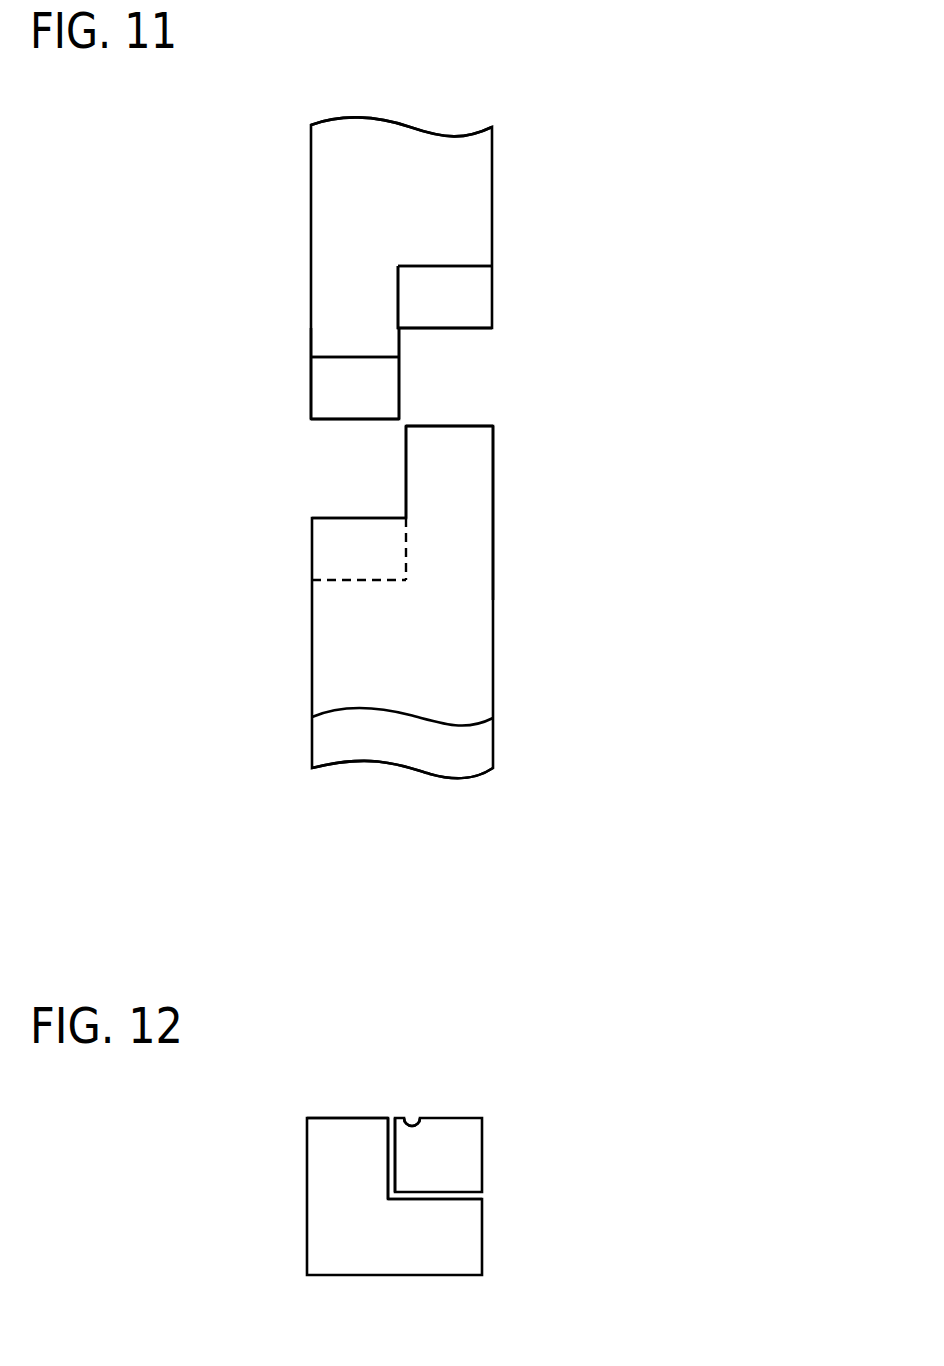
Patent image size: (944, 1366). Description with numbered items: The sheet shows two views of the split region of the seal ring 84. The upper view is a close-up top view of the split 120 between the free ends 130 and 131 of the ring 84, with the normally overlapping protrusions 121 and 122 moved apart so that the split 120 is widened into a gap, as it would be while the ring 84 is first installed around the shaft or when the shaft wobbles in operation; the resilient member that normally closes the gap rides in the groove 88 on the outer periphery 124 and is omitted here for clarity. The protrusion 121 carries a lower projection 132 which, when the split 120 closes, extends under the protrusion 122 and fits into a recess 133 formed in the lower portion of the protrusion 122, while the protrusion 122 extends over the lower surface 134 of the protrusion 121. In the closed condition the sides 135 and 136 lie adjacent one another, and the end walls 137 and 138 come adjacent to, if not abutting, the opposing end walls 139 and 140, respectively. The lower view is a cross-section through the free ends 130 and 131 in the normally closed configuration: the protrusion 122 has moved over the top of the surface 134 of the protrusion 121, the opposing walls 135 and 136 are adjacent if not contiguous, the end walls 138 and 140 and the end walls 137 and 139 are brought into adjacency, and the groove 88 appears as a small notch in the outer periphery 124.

In FIG. 11, the ring 84 is at (625, 318).
In FIG. 12, the groove 88 is at (412, 1128).
In FIG. 11, the split 120 is at (453, 391).
In FIG. 11, the protrusion 121 is at (343, 328).
In FIG. 12, the protrusion 121 is at (328, 1210).
In FIG. 11, the protrusion 122 is at (452, 462).
In FIG. 12, the protrusion 122 is at (483, 1130).
In FIG. 11, the outer periphery 124 is at (450, 170).
In FIG. 12, the outer periphery 124 is at (332, 1118).
In FIG. 11, the free end 130 is at (268, 228).
In FIG. 11, the free end 131 is at (653, 585).
In FIG. 11, the lower projection 132 is at (338, 393).
In FIG. 11, the recess 133 is at (335, 553).
In FIG. 11, the lower surface 134 is at (458, 292).
In FIG. 12, the lower surface 134 is at (432, 1200).
In FIG. 11, the side 135 is at (400, 340).
In FIG. 12, the side 135 is at (395, 1155).
In FIG. 11, the side 136 is at (405, 474).
In FIG. 12, the side 136 is at (395, 1157).
In FIG. 11, the end wall 137 is at (342, 422).
In FIG. 11, the end wall 138 is at (455, 422).
In FIG. 11, the end wall 139 is at (366, 582).
In FIG. 11, the end wall 140 is at (440, 266).